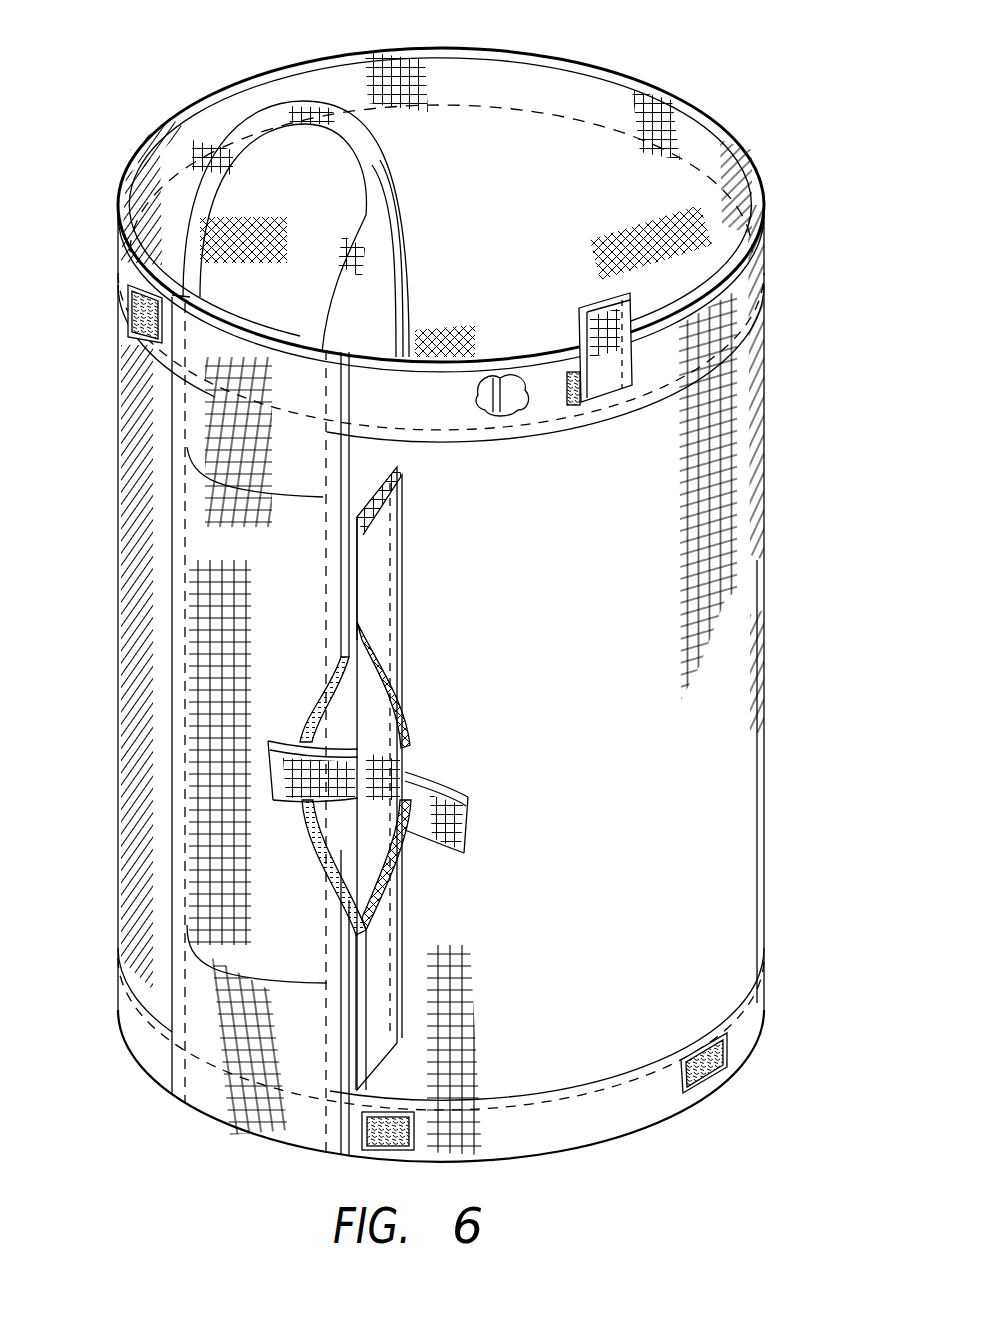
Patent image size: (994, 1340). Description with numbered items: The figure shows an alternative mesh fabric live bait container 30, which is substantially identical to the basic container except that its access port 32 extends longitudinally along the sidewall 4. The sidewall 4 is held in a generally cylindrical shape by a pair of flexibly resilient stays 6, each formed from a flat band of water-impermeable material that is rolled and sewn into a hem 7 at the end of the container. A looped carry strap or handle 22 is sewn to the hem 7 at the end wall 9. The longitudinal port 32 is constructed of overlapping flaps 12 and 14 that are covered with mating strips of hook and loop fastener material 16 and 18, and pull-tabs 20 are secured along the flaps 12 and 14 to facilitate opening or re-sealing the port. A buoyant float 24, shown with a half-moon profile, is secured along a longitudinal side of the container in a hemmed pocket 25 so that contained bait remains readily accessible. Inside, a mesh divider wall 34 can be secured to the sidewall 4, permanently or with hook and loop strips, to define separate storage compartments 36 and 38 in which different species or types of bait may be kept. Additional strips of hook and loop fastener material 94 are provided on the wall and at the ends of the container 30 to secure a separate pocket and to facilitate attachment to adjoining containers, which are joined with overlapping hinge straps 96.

The sidewall 4 is at (766, 482).
The stay 6 is at (507, 398).
The hem 7 is at (426, 413).
The end wall 9 is at (580, 152).
The flap 12 is at (400, 928).
The flap 14 is at (355, 958).
The hook and loop fastener material 16 is at (400, 723).
The hook and loop fastener material 18 is at (362, 690).
The pull-tab 20 is at (289, 745).
The carry strap 22 is at (222, 137).
The buoyant float 24 is at (270, 612).
The hemmed pocket 25 is at (670, 1100).
The container 30 is at (205, 45).
The access port 32 is at (405, 973).
The mesh divider wall 34 is at (392, 760).
The storage compartment 36 is at (398, 705).
The storage compartment 38 is at (381, 848).
The strip of hook and loop fastener material 94 is at (136, 310).
The hinge strap 96 is at (600, 302).